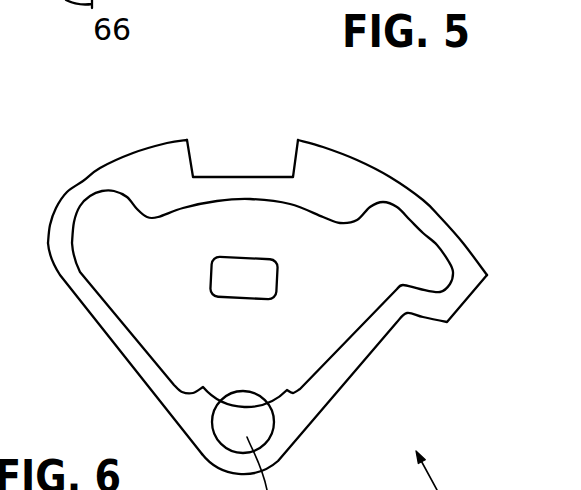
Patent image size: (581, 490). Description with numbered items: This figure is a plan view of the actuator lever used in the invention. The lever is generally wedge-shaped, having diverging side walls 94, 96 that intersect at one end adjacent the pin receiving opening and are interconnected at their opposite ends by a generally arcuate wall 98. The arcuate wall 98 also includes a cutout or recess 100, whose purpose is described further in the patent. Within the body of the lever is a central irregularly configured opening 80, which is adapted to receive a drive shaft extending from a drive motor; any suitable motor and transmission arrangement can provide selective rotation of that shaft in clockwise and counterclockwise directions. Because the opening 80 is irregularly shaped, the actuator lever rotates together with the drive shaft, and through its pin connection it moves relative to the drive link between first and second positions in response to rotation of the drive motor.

The central irregularly configured opening 80 is at (277, 268).
The side wall 94 is at (110, 348).
The side wall 96 is at (343, 383).
The arcuate wall 98 is at (433, 210).
The cutout or recess 100 is at (296, 148).